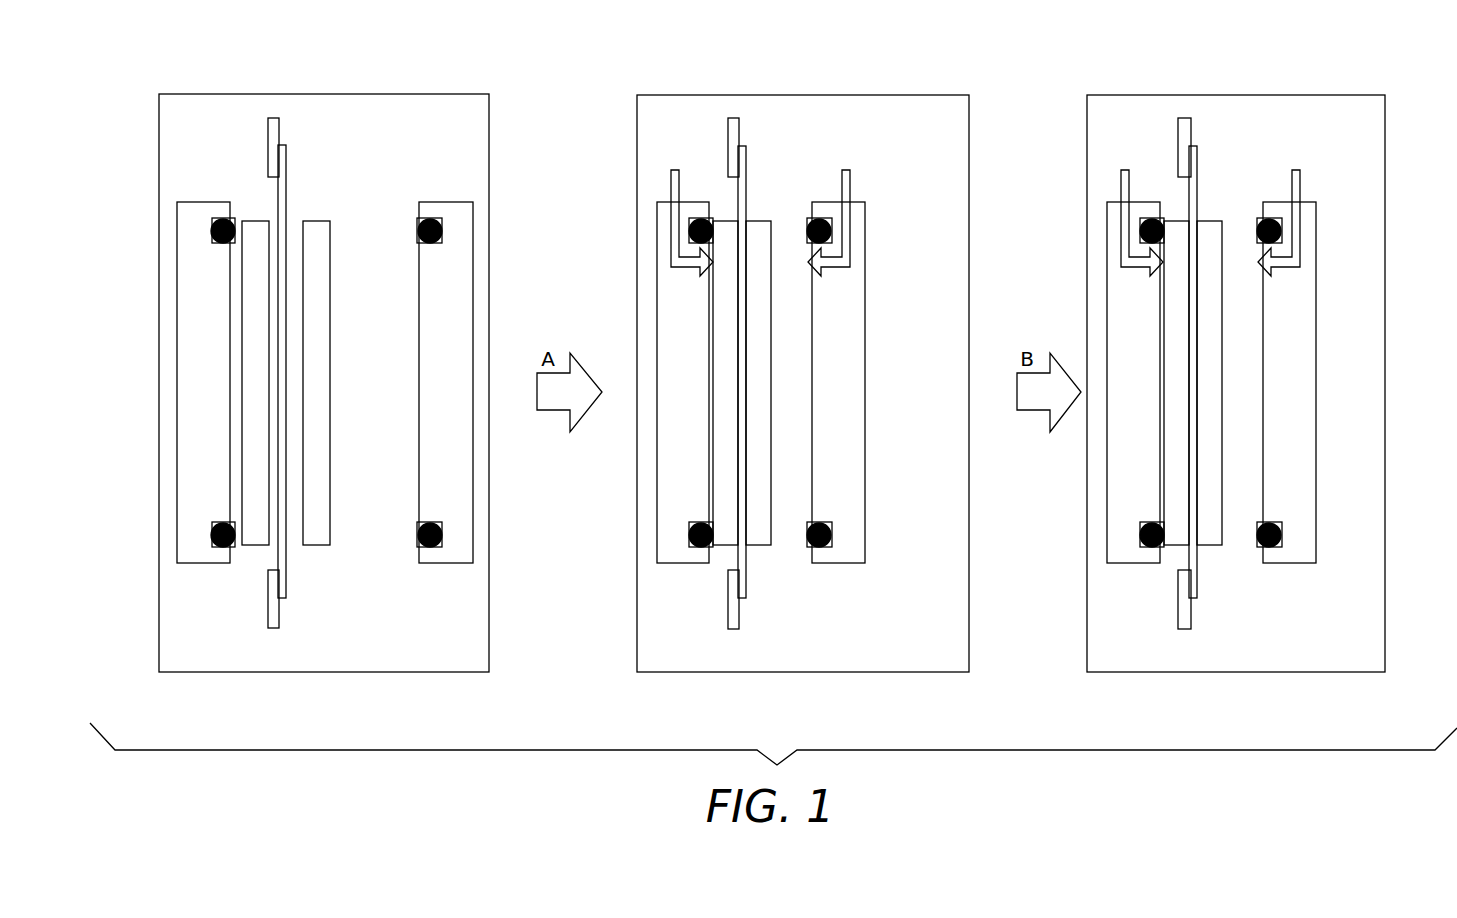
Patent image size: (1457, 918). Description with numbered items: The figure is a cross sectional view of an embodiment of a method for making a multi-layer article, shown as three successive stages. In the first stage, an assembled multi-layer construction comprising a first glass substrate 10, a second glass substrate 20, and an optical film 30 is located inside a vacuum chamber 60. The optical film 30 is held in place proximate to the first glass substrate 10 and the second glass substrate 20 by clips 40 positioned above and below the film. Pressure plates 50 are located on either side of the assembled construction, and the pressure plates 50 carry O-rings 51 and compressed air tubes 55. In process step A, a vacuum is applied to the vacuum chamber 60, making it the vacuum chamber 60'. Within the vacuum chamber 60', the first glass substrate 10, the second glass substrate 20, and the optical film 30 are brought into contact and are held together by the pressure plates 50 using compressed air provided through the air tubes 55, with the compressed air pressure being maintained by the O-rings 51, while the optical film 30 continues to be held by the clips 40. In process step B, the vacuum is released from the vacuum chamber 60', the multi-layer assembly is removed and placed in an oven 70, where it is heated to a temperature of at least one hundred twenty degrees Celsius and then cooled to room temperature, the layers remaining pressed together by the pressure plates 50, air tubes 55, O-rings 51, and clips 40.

The first glass substrate 10 is at (254, 547).
The second glass substrate 20 is at (317, 547).
The optical film 30 is at (278, 185).
The clips 40 is at (268, 130).
The pressure plates 50 is at (195, 393).
The O-rings 51 is at (418, 224).
The compressed air tubes 55 is at (671, 183).
The vacuum chamber 60 is at (359, 383).
The vacuum chamber 60' is at (844, 383).
The oven 70 is at (1362, 625).